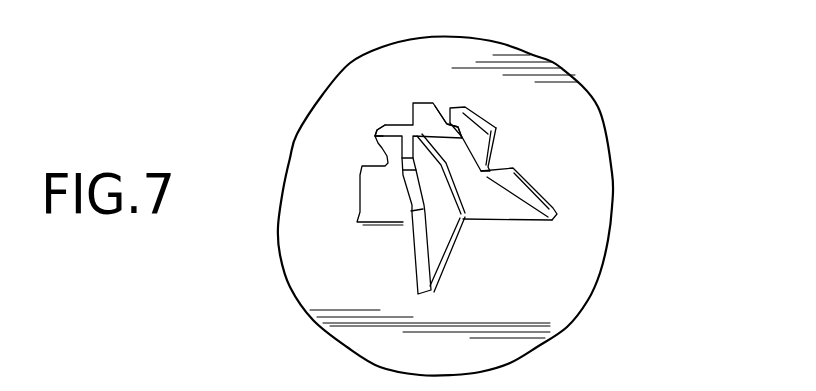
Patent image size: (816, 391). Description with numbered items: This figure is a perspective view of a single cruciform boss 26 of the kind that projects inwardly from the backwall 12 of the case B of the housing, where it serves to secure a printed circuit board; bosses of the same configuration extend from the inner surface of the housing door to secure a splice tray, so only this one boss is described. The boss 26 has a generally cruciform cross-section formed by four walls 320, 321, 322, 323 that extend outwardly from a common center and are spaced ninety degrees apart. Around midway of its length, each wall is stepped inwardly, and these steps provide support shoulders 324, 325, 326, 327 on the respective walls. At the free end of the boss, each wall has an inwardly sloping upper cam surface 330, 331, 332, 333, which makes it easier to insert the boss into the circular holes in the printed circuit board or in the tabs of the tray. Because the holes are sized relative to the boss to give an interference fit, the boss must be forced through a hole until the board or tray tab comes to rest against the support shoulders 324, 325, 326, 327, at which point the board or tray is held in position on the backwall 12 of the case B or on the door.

The backwall 12 is at (587, 230).
The cruciform boss 26 is at (556, 195).
The case B is at (597, 280).
The wall 320 is at (462, 128).
The wall 321 is at (497, 203).
The wall 322 is at (432, 240).
The wall 323 is at (371, 203).
The support shoulder 324 is at (451, 108).
The support shoulder 325 is at (510, 163).
The support shoulder 326 is at (403, 227).
The support shoulder 327 is at (363, 164).
The upper cam surface 330 is at (429, 103).
The upper cam surface 331 is at (488, 127).
The upper cam surface 332 is at (402, 171).
The upper cam surface 333 is at (378, 131).